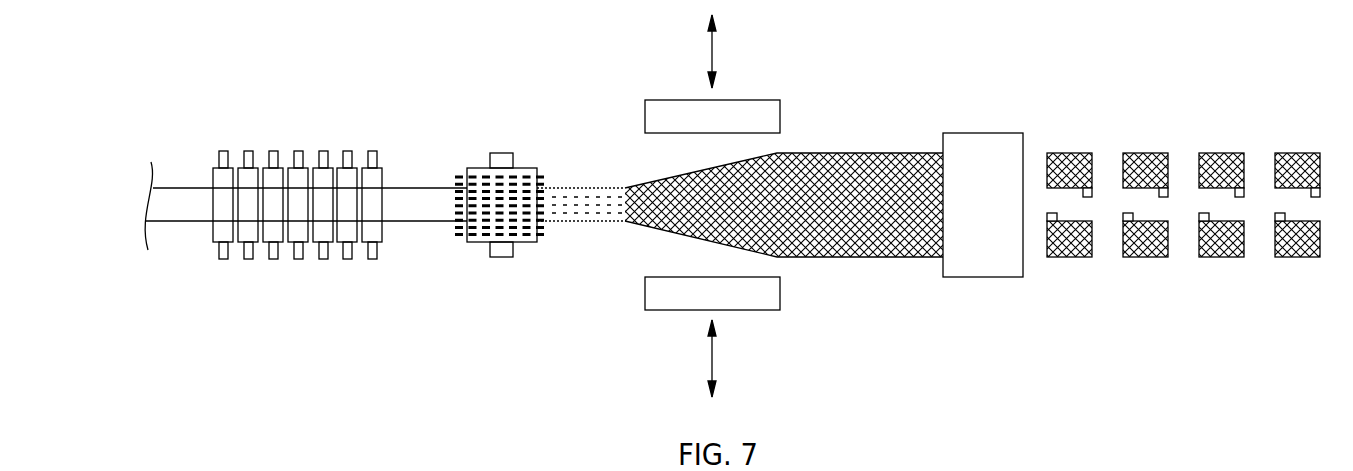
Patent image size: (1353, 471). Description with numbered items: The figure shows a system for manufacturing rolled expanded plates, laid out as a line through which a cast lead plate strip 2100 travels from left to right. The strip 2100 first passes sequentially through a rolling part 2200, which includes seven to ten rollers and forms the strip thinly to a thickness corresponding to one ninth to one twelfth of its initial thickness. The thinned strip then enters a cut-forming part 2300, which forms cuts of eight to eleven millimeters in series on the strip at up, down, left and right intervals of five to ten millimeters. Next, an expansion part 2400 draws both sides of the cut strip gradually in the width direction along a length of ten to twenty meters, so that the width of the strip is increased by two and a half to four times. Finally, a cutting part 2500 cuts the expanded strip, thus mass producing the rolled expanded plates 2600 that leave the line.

The cast lead plate strip 2100 is at (185, 213).
The rolling part 2200 is at (312, 108).
The cut-forming part 2300 is at (523, 170).
The expansion part 2400 is at (745, 113).
The cutting part 2500 is at (995, 148).
The rolled expanded plates 2600 is at (1218, 160).